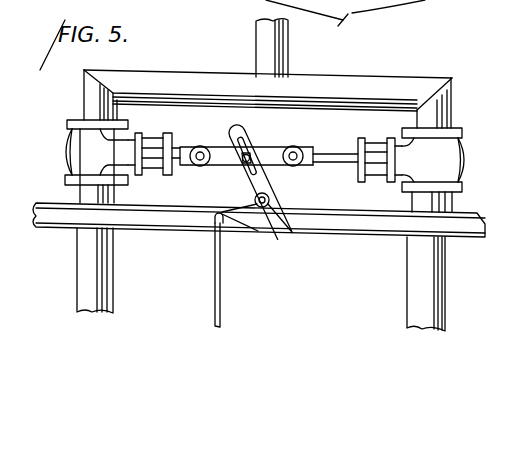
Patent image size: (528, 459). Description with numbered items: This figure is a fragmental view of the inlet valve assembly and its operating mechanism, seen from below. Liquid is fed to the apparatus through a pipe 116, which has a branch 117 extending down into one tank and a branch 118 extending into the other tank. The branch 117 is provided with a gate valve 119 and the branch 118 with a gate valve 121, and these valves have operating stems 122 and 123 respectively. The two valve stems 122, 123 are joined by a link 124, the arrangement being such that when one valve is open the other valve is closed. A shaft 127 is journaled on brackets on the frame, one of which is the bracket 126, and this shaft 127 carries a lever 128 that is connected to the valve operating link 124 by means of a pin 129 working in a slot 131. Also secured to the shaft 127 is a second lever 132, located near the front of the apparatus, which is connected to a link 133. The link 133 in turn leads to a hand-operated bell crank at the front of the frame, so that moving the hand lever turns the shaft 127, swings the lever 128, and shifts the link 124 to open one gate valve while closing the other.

The pipe 116 is at (264, 43).
The branch 117 is at (88, 97).
The branch 118 is at (445, 107).
The gate valve 119 is at (82, 148).
The gate valve 121 is at (453, 154).
The operating stem 122 is at (185, 130).
The operating stem 123 is at (328, 157).
The link 124 is at (272, 150).
The bracket 126 is at (268, 205).
The shaft 127 is at (264, 207).
The lever 128 is at (266, 178).
The pin 129 is at (238, 162).
The slot 131 is at (243, 133).
The lever 132 is at (217, 229).
The link 133 is at (212, 283).